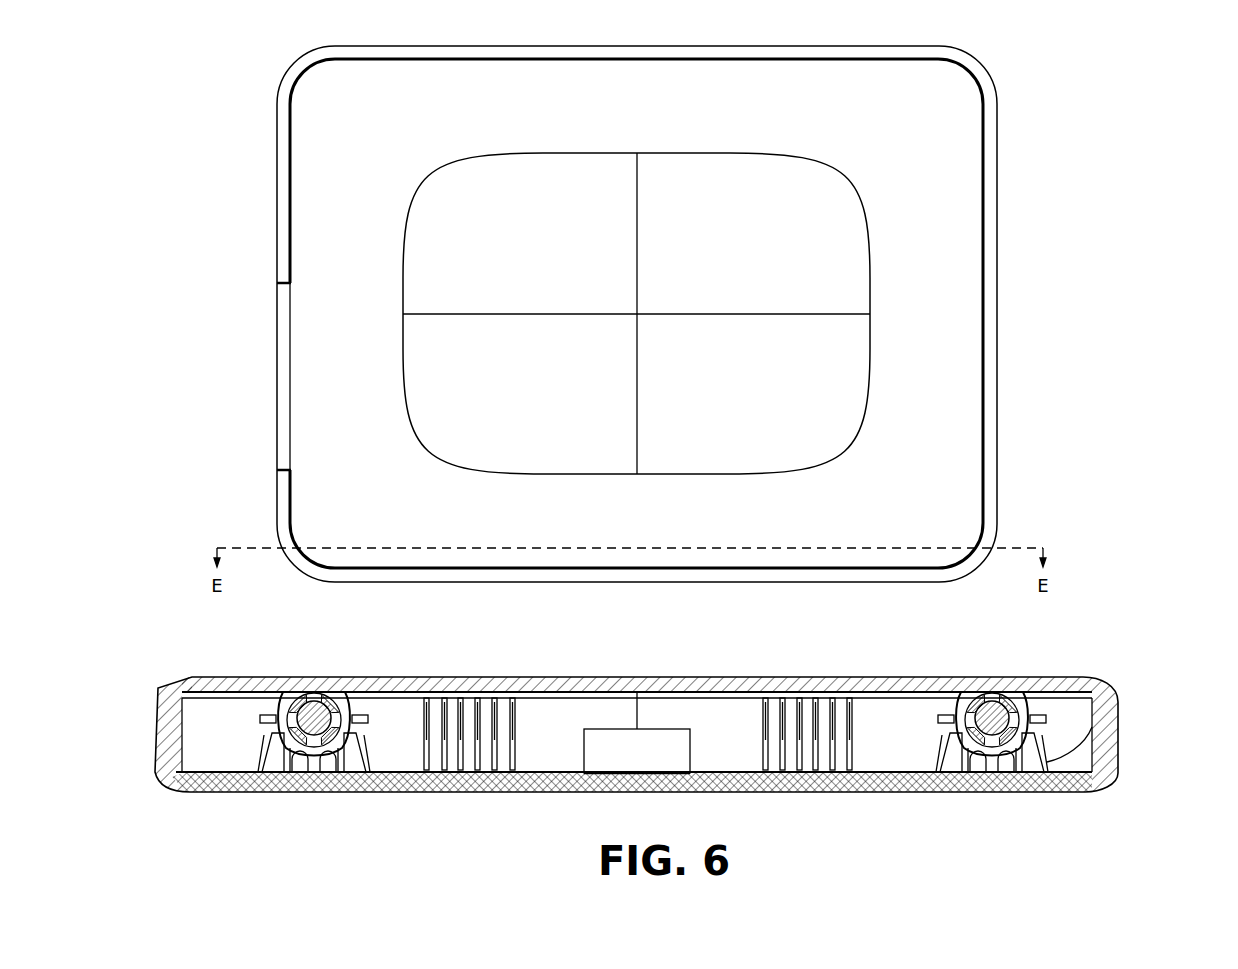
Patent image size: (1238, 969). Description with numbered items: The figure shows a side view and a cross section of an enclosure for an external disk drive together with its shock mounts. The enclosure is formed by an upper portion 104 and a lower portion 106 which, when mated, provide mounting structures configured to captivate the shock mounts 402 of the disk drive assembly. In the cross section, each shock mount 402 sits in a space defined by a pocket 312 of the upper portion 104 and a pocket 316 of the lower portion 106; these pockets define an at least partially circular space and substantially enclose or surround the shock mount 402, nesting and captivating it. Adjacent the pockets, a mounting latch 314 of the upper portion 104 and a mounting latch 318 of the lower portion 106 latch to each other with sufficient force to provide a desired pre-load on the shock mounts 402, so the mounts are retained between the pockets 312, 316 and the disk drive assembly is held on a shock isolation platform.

The upper portion 104 is at (623, 792).
The lower portion 106 is at (632, 677).
The pocket 312 is at (1010, 788).
The mounting latch 314 is at (1118, 735).
The pocket 316 is at (1012, 690).
The mounting latch 318 is at (1033, 730).
The shock mount 402 is at (972, 768).